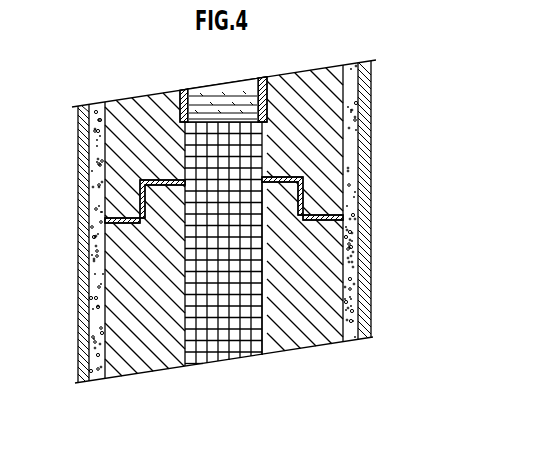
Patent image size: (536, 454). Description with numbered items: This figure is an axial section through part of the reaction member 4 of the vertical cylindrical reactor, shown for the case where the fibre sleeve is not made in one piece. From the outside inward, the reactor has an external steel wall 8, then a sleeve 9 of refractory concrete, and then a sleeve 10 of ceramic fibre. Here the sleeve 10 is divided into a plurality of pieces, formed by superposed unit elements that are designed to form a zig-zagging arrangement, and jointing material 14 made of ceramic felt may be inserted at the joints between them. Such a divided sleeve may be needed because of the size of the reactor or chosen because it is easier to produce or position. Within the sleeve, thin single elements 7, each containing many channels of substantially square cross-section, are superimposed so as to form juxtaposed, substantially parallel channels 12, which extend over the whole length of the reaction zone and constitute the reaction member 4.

The reaction member 4 is at (262, 240).
The thin single elements 7 is at (260, 262).
The external steel wall 8 is at (364, 79).
The sleeve of refractory concrete 9 is at (350, 110).
The sleeve of ceramic fibre 10 is at (330, 156).
The channels 12 is at (230, 353).
The jointing material 14 is at (143, 181).